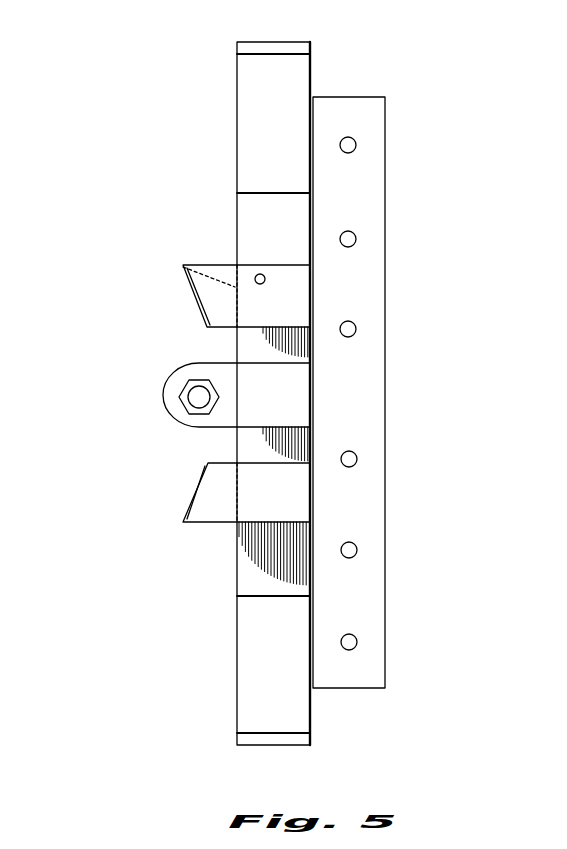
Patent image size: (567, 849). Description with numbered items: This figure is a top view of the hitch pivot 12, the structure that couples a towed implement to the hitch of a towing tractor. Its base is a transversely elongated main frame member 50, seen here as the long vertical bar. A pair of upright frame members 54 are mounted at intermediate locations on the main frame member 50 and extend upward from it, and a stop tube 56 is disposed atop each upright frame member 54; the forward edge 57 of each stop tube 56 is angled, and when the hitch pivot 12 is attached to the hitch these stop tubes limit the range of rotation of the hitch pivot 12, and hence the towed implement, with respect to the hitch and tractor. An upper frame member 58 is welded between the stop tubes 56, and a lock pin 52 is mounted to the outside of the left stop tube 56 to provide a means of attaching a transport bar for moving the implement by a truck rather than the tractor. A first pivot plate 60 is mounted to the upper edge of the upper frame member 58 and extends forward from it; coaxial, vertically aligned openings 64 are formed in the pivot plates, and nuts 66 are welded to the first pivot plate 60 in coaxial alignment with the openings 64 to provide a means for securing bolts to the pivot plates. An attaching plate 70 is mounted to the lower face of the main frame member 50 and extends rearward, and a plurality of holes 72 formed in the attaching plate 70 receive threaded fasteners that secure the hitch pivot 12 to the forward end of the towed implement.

The hitch pivot 12 is at (90, 161).
The main frame member 50 is at (235, 115).
The lock pin 52 is at (265, 281).
The upright frame member 54 is at (183, 267).
The stop tube 56 is at (215, 265).
The forward edge 57 is at (190, 288).
The upper frame member 58 is at (257, 573).
The first pivot plate 60 is at (165, 410).
The openings 64 is at (200, 395).
The nuts 66 is at (193, 413).
The attaching plate 70 is at (385, 127).
The holes 72 is at (354, 150).